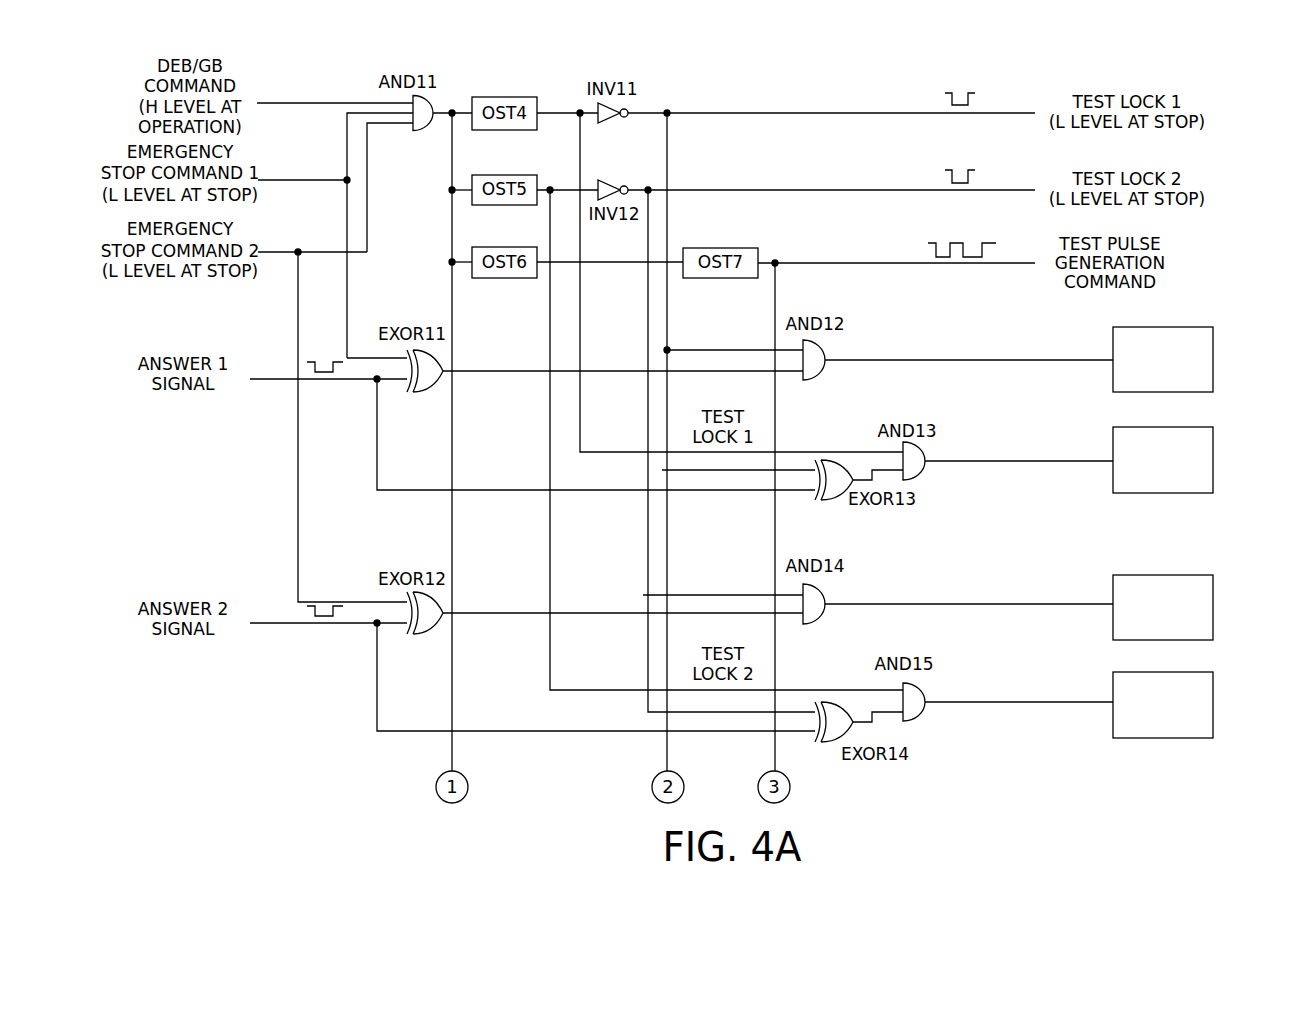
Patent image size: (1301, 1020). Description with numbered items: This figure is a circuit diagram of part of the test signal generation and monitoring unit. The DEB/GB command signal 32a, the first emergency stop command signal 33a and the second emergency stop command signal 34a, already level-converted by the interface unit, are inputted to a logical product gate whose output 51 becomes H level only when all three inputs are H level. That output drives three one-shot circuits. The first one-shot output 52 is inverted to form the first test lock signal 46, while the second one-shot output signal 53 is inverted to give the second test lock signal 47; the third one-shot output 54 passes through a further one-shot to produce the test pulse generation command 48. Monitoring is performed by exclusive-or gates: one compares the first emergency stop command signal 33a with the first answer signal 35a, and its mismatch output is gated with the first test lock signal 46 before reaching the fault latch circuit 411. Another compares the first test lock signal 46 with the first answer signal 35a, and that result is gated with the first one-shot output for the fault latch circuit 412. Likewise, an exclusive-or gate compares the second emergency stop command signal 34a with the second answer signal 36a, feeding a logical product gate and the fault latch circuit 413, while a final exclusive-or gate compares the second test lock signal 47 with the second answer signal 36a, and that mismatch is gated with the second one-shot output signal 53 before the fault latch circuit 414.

The DEB/GB command signal 32a is at (335, 90).
The emergency stop command 1 signal 33a is at (335, 235).
The emergency stop command 2 signal 34a is at (335, 362).
The answer 1 signal 35a is at (532, 422).
The answer 2 signal 36a is at (532, 664).
The AND11 output node 51 is at (452, 428).
The OST4 output node 52 is at (720, 268).
The OST5 output signal 53 is at (720, 428).
The OST6 output node 54 is at (610, 279).
The test lock 1 signal 46 is at (831, 429).
The test lock 2 signal 47 is at (831, 439).
The test pulse generation command 48 is at (896, 503).
The fault latch circuit 411 is at (1213, 360).
The fault latch circuit 412 is at (1213, 460).
The fault latch circuit 413 is at (1213, 608).
The fault latch circuit 414 is at (1213, 705).